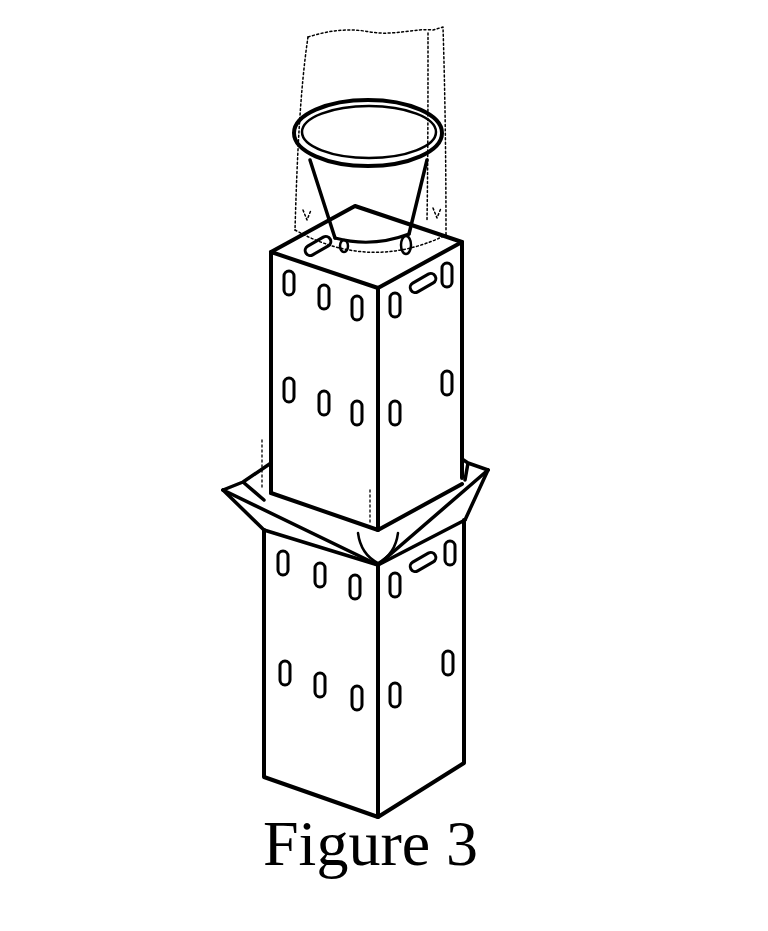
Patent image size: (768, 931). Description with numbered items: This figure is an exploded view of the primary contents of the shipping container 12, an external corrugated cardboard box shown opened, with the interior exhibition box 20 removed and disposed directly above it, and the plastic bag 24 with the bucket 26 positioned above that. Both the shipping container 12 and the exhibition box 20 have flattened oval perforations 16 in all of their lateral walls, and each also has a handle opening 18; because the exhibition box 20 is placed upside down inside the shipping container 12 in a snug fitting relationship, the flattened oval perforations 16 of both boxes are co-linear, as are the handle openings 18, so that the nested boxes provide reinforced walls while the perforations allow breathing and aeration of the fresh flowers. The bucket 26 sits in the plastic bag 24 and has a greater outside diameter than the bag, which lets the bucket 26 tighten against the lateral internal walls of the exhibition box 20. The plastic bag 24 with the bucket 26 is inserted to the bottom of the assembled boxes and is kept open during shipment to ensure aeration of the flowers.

The shipping container 12 is at (260, 655).
The flattened oval perforations 16 is at (448, 383).
The handle opening 18 is at (437, 283).
The exhibition box 20 is at (263, 368).
The plastic bag 24 is at (447, 105).
The bucket 26 is at (297, 137).